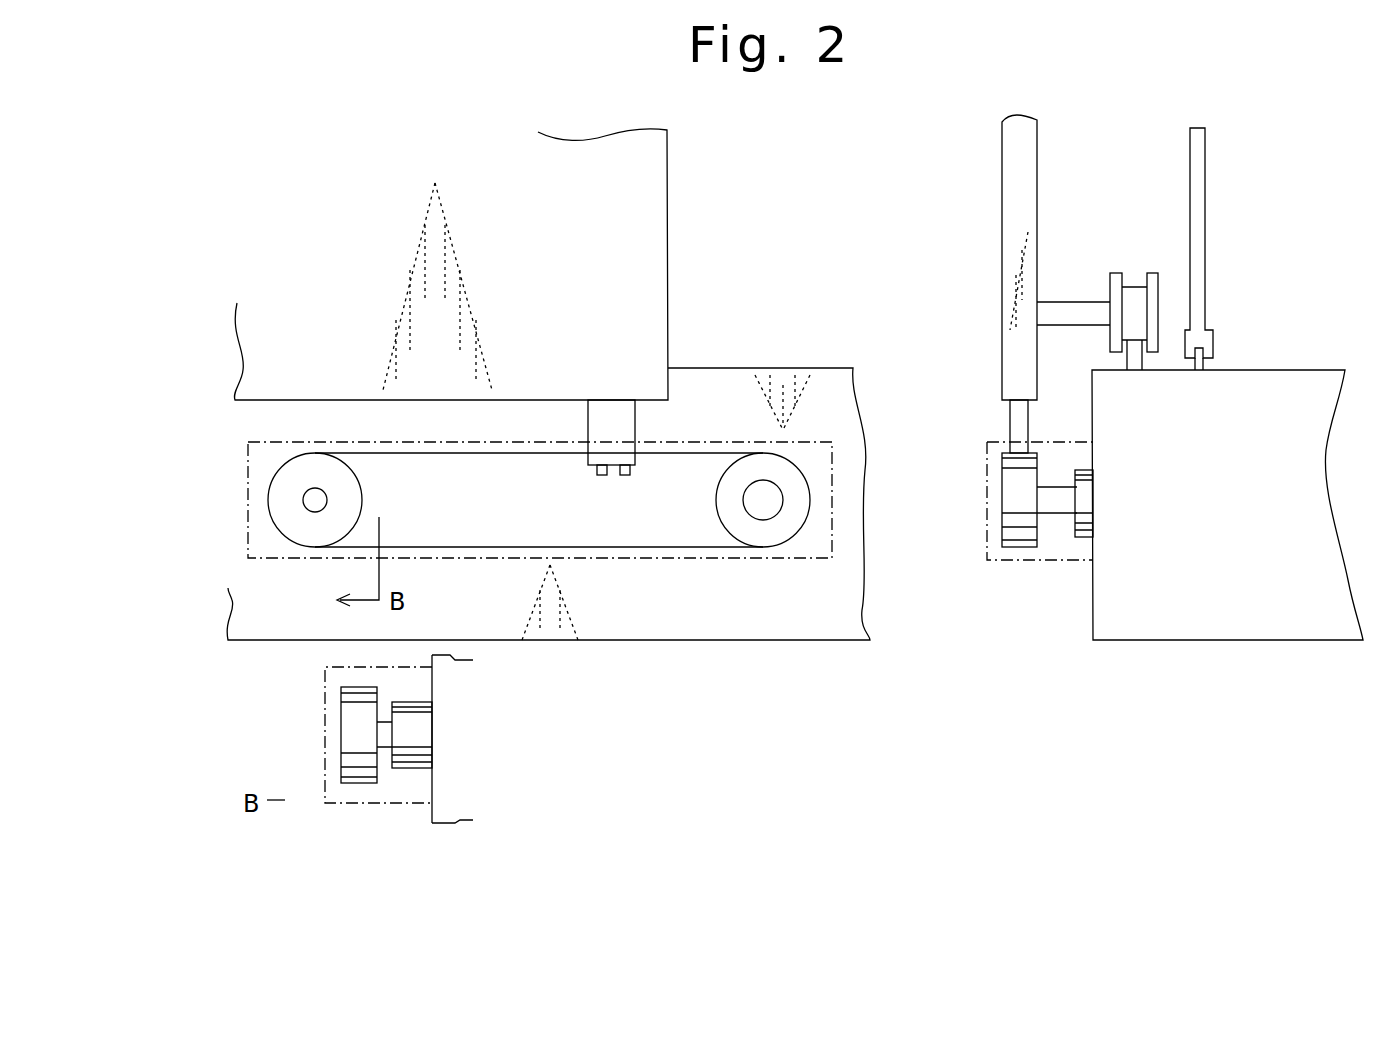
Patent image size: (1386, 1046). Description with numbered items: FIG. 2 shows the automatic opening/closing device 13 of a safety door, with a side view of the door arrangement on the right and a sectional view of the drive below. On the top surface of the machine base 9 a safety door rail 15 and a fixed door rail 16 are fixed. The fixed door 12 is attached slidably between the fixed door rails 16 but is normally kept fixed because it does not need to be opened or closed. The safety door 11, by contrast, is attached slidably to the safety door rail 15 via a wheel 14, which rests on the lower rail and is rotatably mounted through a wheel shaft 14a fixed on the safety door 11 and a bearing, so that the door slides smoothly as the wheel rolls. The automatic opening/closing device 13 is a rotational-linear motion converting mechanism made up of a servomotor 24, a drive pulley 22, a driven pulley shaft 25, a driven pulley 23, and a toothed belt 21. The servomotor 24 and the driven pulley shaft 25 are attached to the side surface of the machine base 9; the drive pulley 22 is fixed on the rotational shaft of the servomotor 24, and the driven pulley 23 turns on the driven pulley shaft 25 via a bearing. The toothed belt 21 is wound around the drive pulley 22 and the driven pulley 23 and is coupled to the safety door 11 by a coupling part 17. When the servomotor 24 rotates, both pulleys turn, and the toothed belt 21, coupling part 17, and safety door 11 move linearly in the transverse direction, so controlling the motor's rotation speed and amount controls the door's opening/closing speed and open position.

The machine base 9 is at (1208, 607).
The safety door 11 is at (642, 200).
The fixed door 12 is at (1202, 157).
The automatic opening/closing device 13 is at (813, 560).
The wheel 14 is at (1135, 300).
The wheel shaft 14a is at (1075, 313).
The safety door rail 15 is at (1133, 373).
The fixed door rail 16 is at (1197, 373).
The coupling part 17 is at (623, 428).
The toothed belt 21 is at (688, 548).
The drive pulley 22 is at (305, 527).
The driven pulley 23 is at (763, 533).
The servomotor 24 is at (420, 730).
The driven pulley shaft 25 is at (1063, 498).